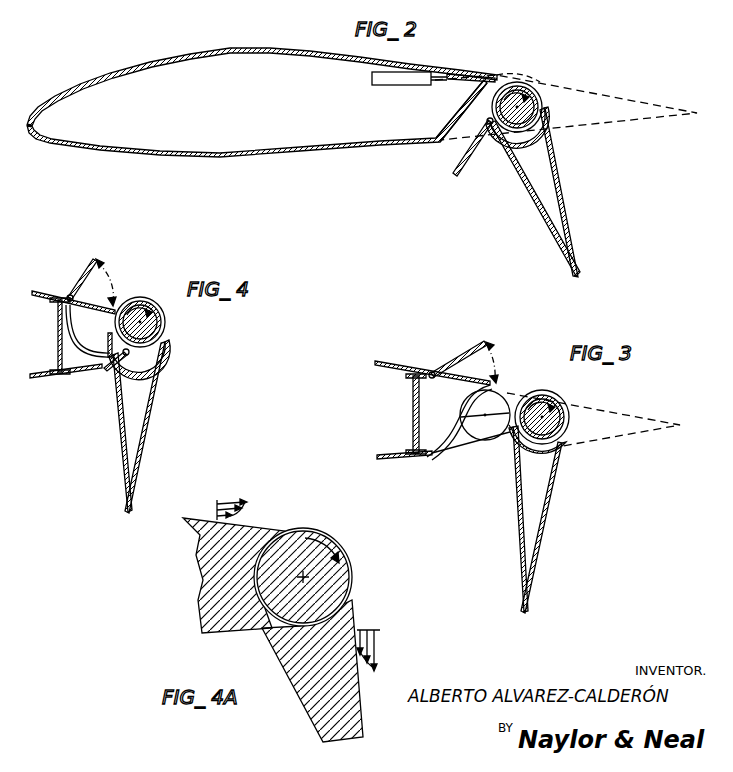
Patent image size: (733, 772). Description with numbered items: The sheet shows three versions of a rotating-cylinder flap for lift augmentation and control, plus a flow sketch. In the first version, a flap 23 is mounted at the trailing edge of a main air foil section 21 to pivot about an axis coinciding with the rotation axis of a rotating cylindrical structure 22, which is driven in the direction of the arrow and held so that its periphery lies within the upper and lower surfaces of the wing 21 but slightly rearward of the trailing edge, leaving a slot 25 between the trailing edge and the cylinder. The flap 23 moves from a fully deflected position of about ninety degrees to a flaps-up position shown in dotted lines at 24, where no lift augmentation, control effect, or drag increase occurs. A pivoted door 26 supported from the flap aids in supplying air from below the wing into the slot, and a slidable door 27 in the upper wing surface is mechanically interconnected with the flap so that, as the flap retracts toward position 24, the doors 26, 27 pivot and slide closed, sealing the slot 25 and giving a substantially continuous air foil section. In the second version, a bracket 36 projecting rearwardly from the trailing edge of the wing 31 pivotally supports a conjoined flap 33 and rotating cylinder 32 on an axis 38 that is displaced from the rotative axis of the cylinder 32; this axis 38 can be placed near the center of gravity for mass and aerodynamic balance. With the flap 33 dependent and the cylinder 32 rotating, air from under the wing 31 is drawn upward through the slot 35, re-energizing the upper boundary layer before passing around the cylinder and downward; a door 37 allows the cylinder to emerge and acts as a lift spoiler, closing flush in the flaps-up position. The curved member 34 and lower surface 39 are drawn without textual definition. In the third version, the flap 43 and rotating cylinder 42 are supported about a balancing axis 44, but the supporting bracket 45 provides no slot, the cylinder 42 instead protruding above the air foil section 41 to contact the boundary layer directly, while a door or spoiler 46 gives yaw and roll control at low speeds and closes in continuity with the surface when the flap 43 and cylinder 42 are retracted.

In FIG. 2, the main air foil section 21 is at (252, 48).
In FIG. 2, the rotating cylindrical structure 22 is at (532, 95).
In FIG. 2, the flap 23 is at (570, 182).
In FIG. 2, the flaps up position 24 is at (630, 92).
In FIG. 2, the slot 25 is at (458, 120).
In FIG. 2, the pivoted door 26 is at (470, 165).
In FIG. 2, the slidable door 27 is at (437, 84).
In FIG. 3, the wing 31 is at (385, 363).
In FIG. 3, the rotating cylinder 32 is at (567, 398).
In FIG. 3, the flap 33 is at (550, 498).
In FIG. 3, the curved plate 34 is at (450, 455).
In FIG. 3, the slot 35 is at (512, 393).
In FIG. 3, the bracket 36 is at (484, 442).
In FIG. 3, the pivotal axis 38 is at (506, 440).
In FIG. 3, the door 37 is at (455, 360).
In FIG. 3, the lower wing skin 39 is at (416, 459).
In FIG. 4, the air foil section 41 is at (42, 292).
In FIG. 4, the rotating cylinder 42 is at (166, 320).
In FIG. 4, the flap 43 is at (158, 394).
In FIG. 4, the axis 44 is at (104, 372).
In FIG. 4, the supporting bracket 45 is at (72, 376).
In FIG. 4, the door or spoiler 46 is at (83, 270).